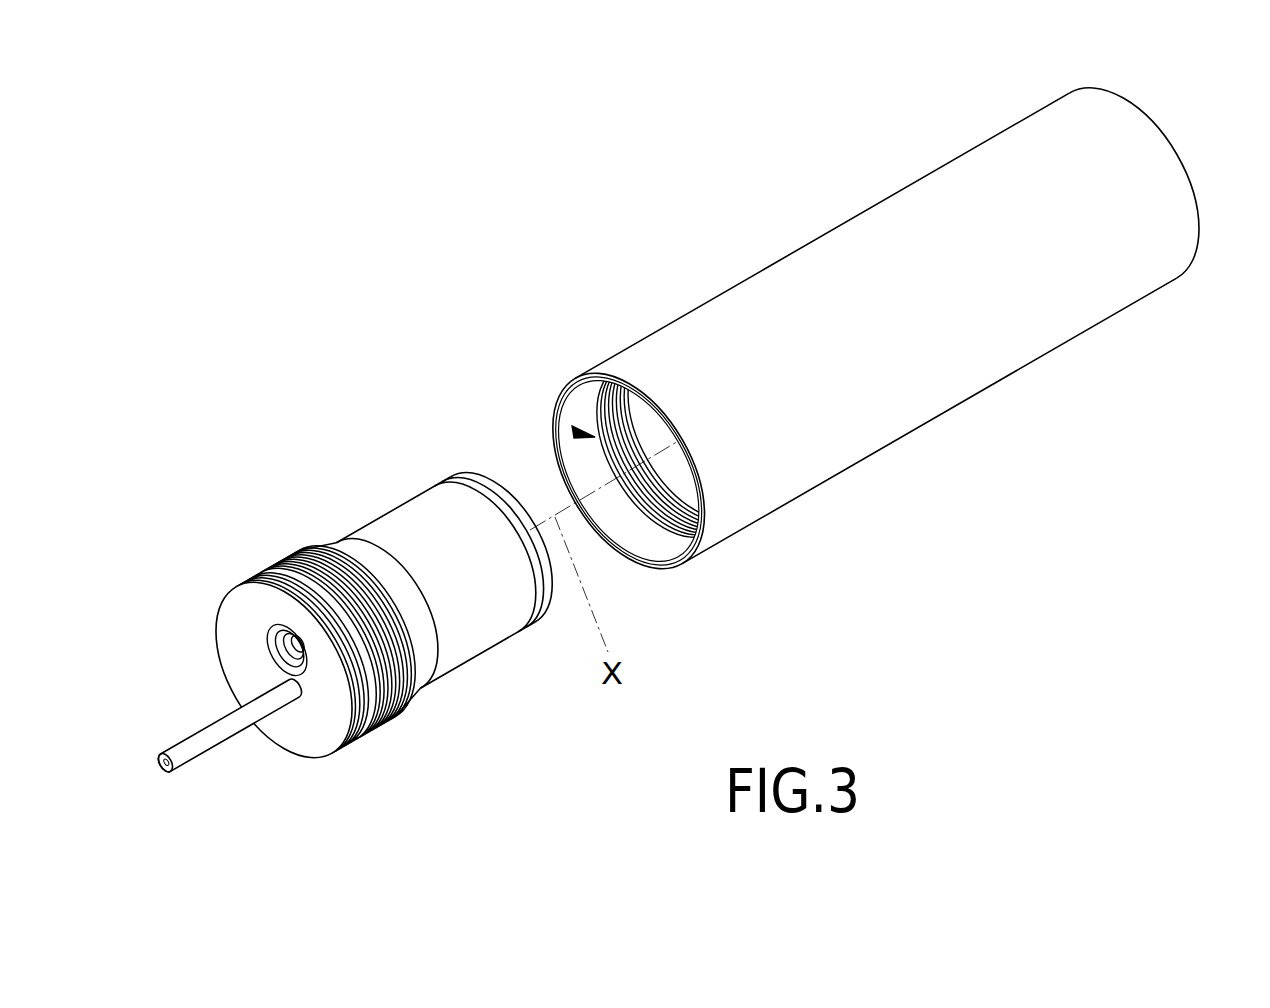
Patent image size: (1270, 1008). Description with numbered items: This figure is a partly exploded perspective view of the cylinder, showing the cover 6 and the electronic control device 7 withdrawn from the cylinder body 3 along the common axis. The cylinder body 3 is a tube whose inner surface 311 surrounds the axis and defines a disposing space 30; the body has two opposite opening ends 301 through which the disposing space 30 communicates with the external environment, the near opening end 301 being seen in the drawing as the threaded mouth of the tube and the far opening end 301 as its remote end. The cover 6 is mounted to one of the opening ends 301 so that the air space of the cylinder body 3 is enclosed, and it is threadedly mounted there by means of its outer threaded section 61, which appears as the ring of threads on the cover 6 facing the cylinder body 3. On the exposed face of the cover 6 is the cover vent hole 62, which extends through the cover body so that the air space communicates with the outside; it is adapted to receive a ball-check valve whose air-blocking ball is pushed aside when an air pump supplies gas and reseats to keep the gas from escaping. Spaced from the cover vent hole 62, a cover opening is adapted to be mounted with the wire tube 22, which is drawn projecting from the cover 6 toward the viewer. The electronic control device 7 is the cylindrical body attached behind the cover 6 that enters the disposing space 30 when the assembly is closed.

The cylinder body 3 is at (782, 261).
The disposing space 30 is at (549, 418).
The opening ends 301 is at (672, 430).
The inner surface 311 is at (658, 543).
The electronic control device 7 is at (385, 510).
The cover 6 is at (222, 613).
The outer threaded section 61 is at (296, 553).
The cover vent hole 62 is at (275, 652).
The wire tube 22 is at (222, 745).